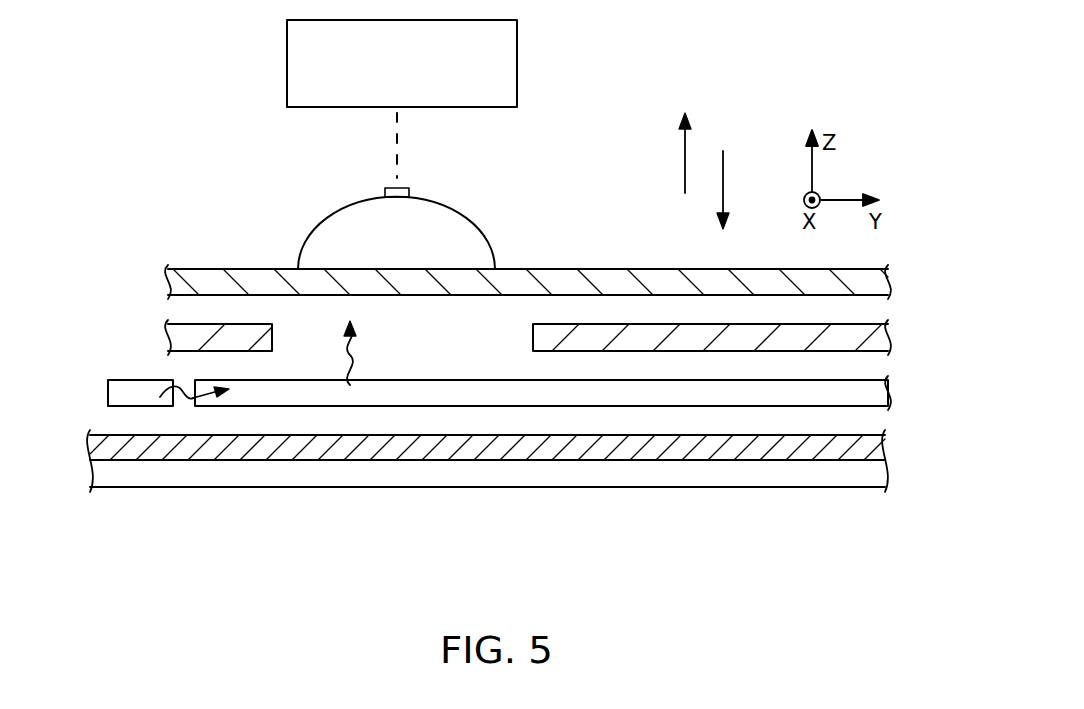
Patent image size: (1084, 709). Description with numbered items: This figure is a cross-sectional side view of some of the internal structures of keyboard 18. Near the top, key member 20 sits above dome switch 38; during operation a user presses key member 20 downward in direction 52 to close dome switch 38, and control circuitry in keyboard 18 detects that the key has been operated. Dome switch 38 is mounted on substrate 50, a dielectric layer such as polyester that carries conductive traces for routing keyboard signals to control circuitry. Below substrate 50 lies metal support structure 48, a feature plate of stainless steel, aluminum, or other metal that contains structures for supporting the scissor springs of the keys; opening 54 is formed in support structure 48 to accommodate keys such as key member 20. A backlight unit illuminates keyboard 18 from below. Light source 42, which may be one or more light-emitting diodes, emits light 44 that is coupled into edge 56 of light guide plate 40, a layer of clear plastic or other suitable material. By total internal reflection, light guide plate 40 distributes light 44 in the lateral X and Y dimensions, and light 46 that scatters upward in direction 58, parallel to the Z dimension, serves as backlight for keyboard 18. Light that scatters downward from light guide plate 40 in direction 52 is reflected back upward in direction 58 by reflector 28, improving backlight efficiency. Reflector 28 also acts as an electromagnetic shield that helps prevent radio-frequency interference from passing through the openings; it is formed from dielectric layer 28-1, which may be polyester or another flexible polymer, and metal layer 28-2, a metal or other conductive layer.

The keyboard 18 is at (797, 28).
The key member 20 is at (512, 62).
The dome switch 38 is at (473, 222).
The upward direction 58 is at (685, 142).
The downward direction 52 is at (723, 185).
The substrate 50 is at (874, 283).
The metal support structure 48 is at (200, 337).
The opening 54 is at (480, 329).
The light 46 is at (355, 357).
The light guide plate 40 is at (877, 394).
The light source 42 is at (113, 392).
The light 44 is at (186, 394).
The edge of light guide plate 56 is at (197, 386).
The reflector 28 is at (895, 435).
The metal layer 28-2 is at (665, 452).
The dielectric layer 28-1 is at (757, 478).